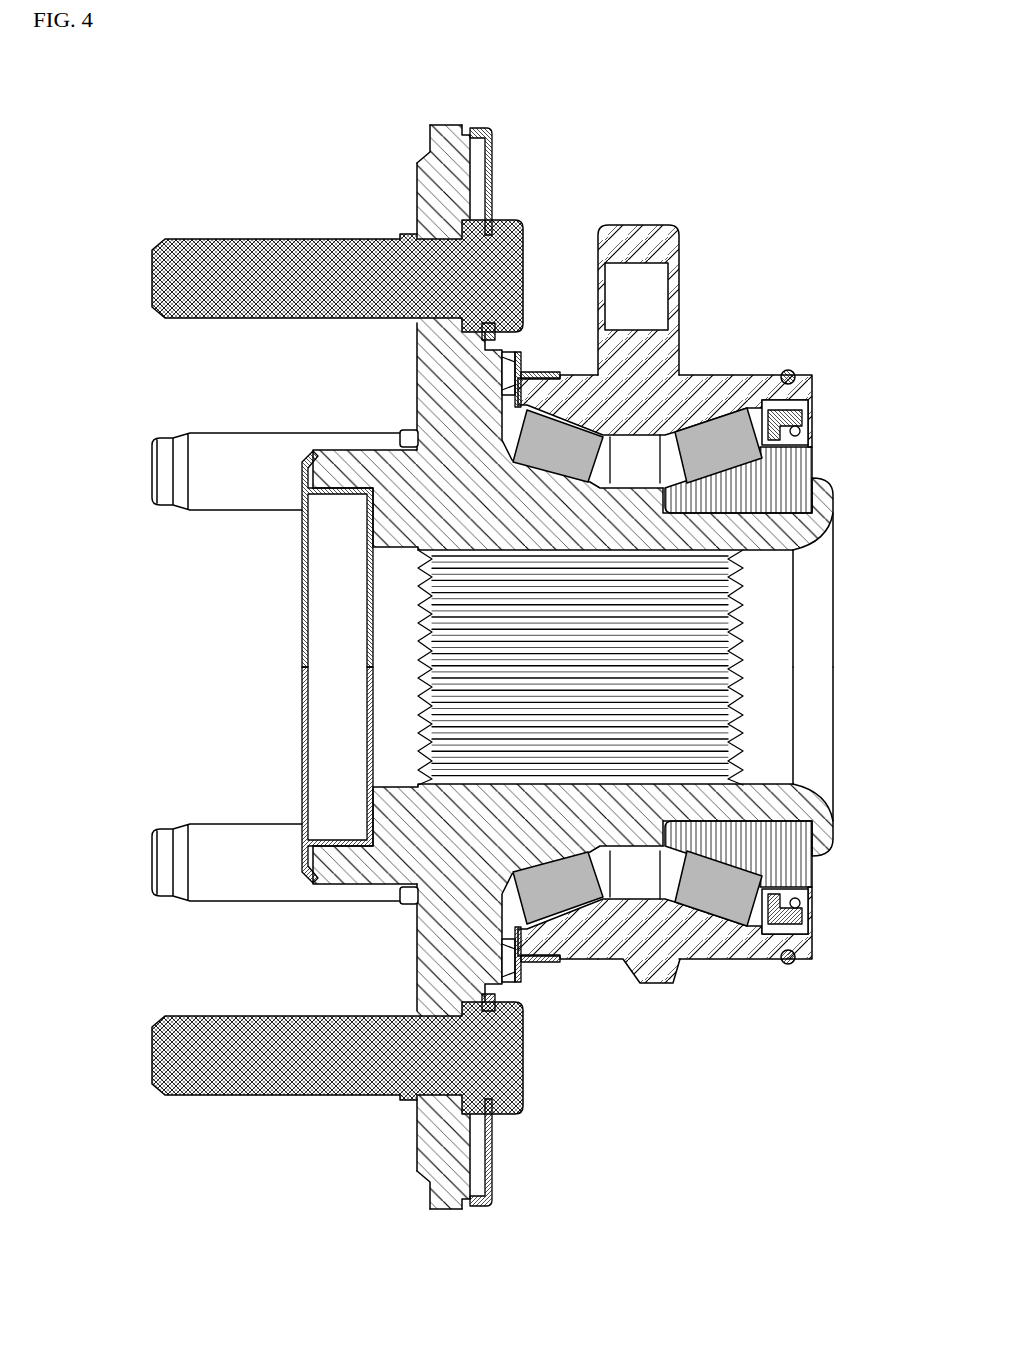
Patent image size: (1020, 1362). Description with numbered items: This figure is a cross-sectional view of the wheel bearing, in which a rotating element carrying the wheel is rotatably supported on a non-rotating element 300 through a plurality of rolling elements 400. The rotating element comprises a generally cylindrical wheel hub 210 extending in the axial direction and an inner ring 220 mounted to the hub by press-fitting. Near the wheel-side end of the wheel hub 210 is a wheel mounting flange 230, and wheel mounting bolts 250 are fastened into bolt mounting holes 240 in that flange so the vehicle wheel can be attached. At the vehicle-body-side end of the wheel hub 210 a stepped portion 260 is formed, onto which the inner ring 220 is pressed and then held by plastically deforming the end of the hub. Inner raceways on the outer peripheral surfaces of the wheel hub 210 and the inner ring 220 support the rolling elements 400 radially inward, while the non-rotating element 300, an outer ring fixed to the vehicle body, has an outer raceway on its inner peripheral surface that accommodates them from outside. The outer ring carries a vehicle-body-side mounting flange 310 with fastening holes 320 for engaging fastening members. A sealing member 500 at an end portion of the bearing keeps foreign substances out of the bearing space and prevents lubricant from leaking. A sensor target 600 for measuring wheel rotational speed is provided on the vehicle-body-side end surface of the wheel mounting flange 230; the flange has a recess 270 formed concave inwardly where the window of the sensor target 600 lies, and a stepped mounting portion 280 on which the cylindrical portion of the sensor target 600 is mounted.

The wheel hub 210 is at (390, 525).
The inner ring 220 is at (803, 463).
The wheel mounting flange 230 is at (415, 372).
The bolt mounting holes 240 is at (460, 228).
The wheel mounting bolts 250 is at (237, 237).
The stepped portion 260 is at (757, 517).
The recess 270 is at (445, 125).
The stepped mounting portion 280 is at (500, 343).
The non-rotating element 300 is at (705, 377).
The vehicle-body-side mounting flange 310 is at (657, 235).
The fastening holes 320 is at (648, 267).
The rolling elements 400 is at (707, 898).
The sealing member 500 is at (540, 965).
The sensor target 600 is at (489, 126).